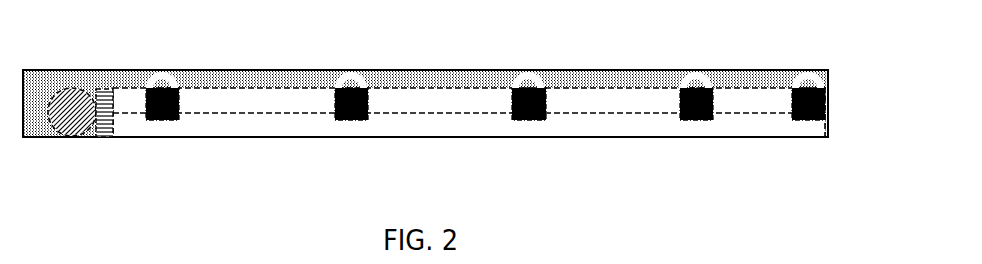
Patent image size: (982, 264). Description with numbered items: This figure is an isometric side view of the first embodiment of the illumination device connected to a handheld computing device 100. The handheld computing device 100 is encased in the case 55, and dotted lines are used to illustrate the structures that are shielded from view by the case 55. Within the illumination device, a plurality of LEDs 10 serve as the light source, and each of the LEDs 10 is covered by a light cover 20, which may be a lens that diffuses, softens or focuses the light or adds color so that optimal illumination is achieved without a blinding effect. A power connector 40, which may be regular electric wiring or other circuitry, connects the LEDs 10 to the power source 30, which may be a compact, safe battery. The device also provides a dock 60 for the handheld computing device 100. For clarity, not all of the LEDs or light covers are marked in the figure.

The LEDs 10 is at (162, 113).
The light covers 20 is at (160, 78).
The power source 30 is at (73, 118).
The power connector 40 is at (122, 113).
The case 55 is at (47, 88).
The dock 60 is at (100, 100).
The handheld computing device 100 is at (240, 90).